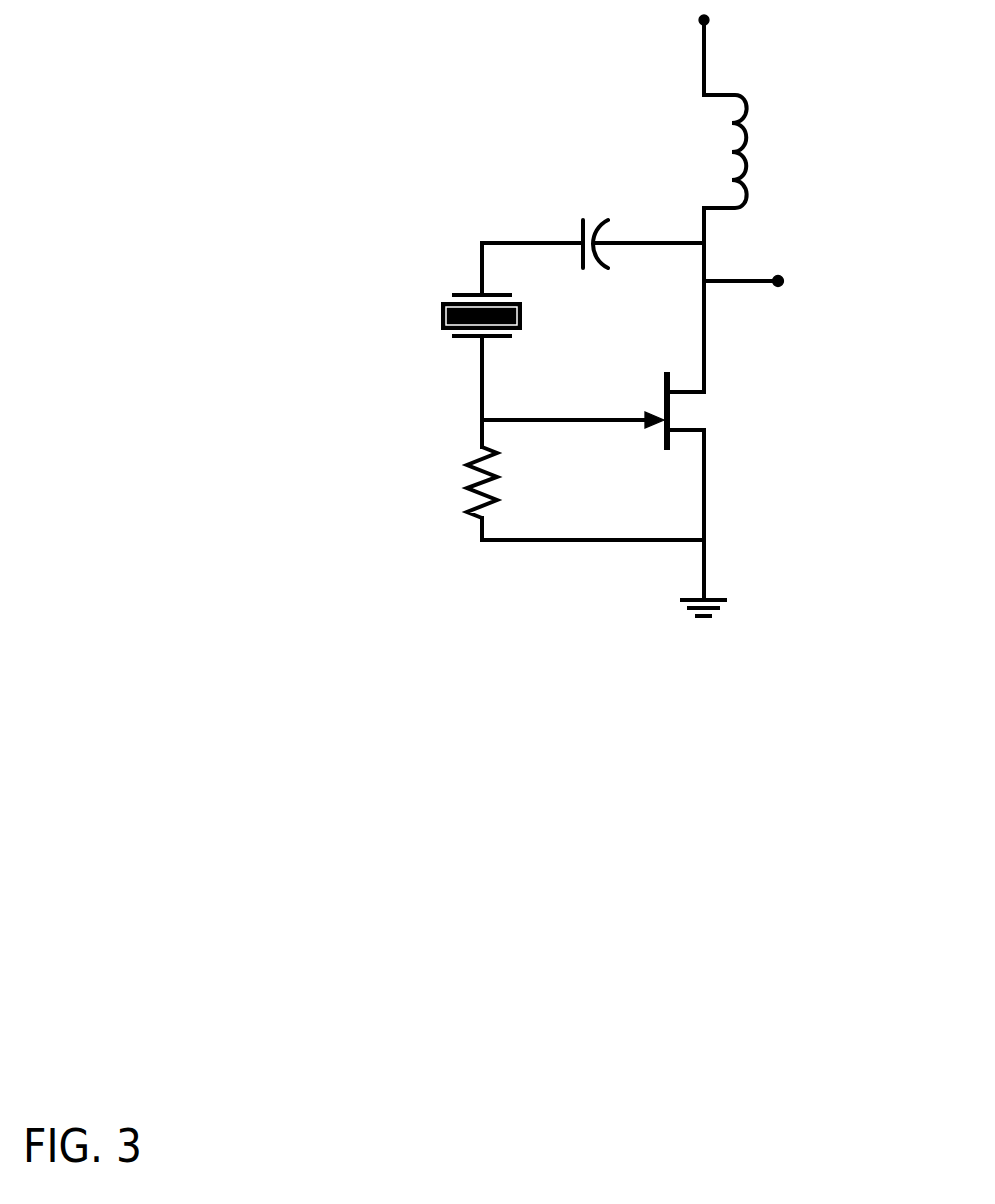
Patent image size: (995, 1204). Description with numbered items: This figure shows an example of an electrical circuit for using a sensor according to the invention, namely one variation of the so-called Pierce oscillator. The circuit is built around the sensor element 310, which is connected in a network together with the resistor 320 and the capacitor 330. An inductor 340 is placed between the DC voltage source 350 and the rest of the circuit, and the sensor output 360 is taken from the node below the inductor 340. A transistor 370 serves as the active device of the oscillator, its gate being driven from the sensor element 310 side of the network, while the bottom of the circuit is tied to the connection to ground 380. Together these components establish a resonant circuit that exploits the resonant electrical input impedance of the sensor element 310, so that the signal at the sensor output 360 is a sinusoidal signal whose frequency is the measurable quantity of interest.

The sensor element 310 is at (421, 318).
The resistor 320 is at (450, 483).
The capacitor 330 is at (590, 188).
The inductor 340 is at (780, 150).
The DC voltage source 350 is at (739, 20).
The sensor output 360 is at (795, 309).
The transistor 370 is at (697, 405).
The connection to ground 380 is at (741, 626).